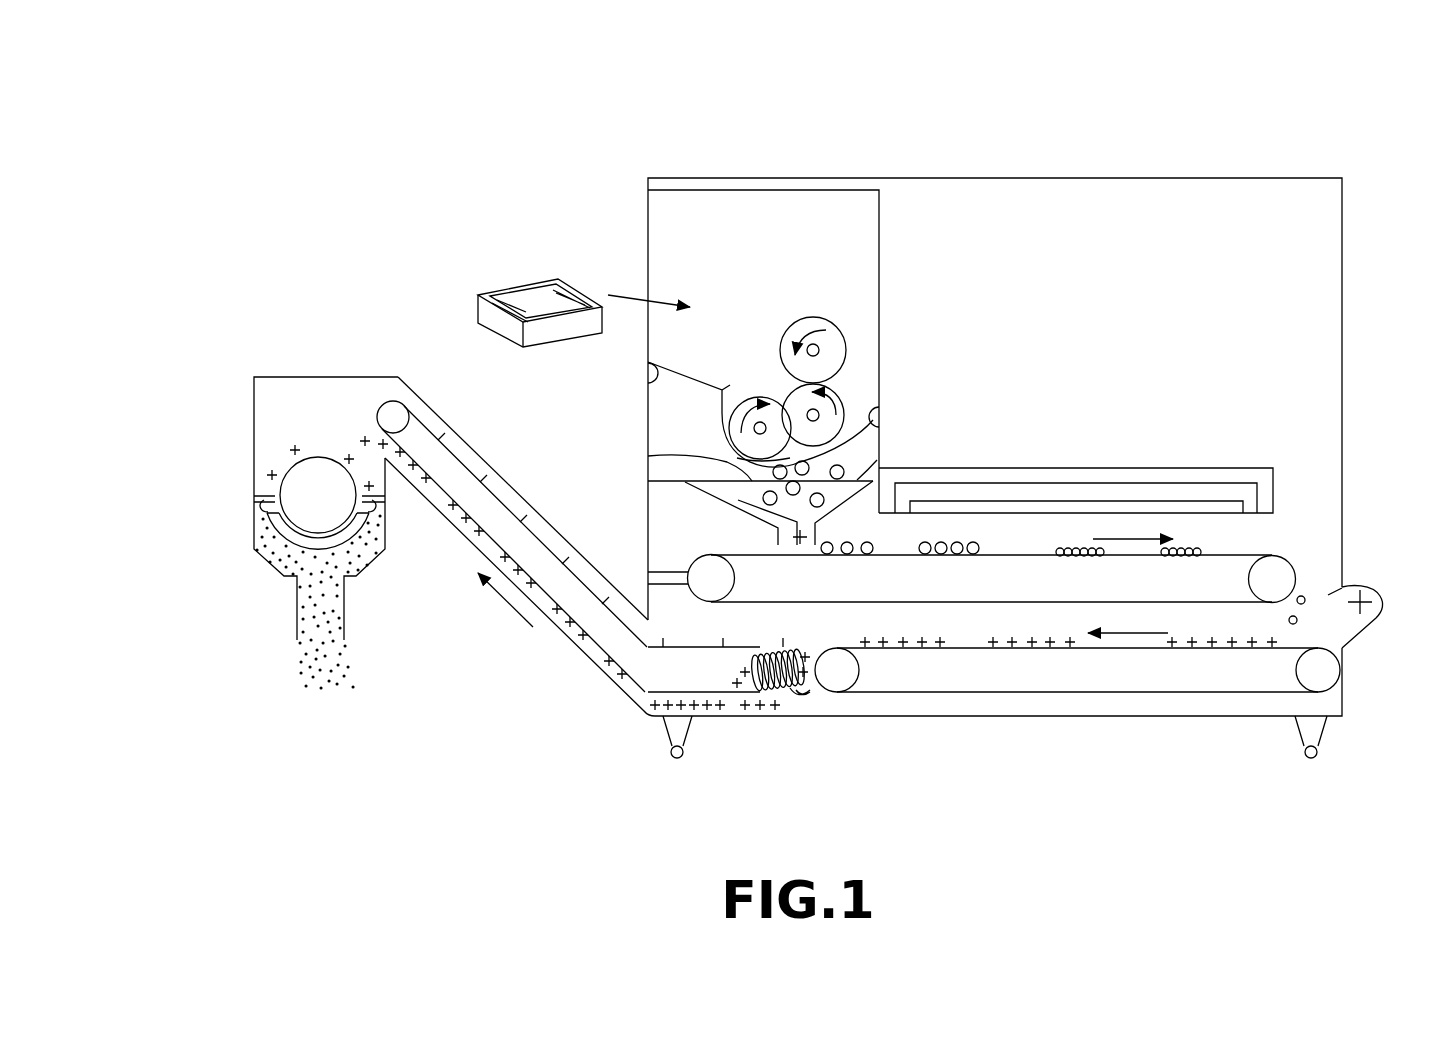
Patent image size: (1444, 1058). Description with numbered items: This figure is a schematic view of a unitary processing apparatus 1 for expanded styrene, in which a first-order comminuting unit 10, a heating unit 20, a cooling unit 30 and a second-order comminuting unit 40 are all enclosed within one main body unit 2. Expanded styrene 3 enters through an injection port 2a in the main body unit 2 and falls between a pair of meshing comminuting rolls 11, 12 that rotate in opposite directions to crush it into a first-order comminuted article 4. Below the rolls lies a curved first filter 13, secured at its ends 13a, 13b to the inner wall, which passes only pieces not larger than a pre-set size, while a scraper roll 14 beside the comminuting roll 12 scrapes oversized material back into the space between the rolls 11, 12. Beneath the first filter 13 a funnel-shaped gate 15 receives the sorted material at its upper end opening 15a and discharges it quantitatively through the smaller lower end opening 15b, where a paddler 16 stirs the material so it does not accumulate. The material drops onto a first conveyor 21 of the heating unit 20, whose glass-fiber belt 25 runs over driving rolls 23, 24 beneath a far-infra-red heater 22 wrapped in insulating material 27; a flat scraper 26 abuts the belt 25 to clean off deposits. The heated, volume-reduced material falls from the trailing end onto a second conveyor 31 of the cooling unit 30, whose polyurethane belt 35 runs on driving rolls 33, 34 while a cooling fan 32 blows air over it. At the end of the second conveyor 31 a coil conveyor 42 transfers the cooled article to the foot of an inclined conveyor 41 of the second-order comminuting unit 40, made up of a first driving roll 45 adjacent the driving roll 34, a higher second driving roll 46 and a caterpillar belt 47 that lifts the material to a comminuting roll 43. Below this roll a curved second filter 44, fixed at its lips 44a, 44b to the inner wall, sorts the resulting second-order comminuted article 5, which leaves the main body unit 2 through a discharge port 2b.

The processing apparatus 1 is at (1140, 152).
The main body unit 2 is at (1345, 352).
The injection port 2a is at (650, 228).
The discharge port 2b is at (317, 649).
The expanded styrene 3 is at (572, 342).
The first-order comminuted article 4 is at (648, 462).
The second-order comminuted article 5 is at (324, 613).
The first-order comminuting unit 10 is at (975, 325).
The comminuting roll 11 is at (733, 412).
The comminuting roll 12 is at (830, 395).
The first filter 13 is at (868, 448).
The end 13a is at (648, 376).
The end 13b is at (876, 416).
The scraper roll 14 is at (833, 340).
The gate 15 is at (682, 488).
The upper end opening 15a is at (880, 466).
The lower end opening 15b is at (784, 537).
The paddler 16 is at (738, 500).
The heating unit 20 is at (1115, 428).
The first conveyor 21 is at (983, 613).
The far-infra-red heater 22 is at (1057, 502).
The driving roll 23 is at (1275, 578).
The driving roll 24 is at (690, 562).
The belt 25 is at (1062, 550).
The scraper 26 is at (662, 597).
The insulating material 27 is at (1226, 470).
The cooling unit 30 is at (1218, 670).
The second conveyor 31 is at (1125, 697).
The cooling fan 32 is at (1378, 596).
The driving roll 33 is at (1333, 673).
The driving roll 34 is at (838, 680).
The belt 35 is at (1013, 697).
The second-order comminuting unit 40 is at (218, 407).
The inclined conveyor 41 is at (563, 658).
The coil conveyor 42 is at (797, 697).
The comminuting roll 43 is at (318, 457).
The second filter 44 is at (350, 535).
The lip 44a is at (258, 518).
The lip 44b is at (384, 522).
The first driving roll 45 is at (810, 694).
The second driving roll 46 is at (390, 412).
The belt 47 is at (455, 440).